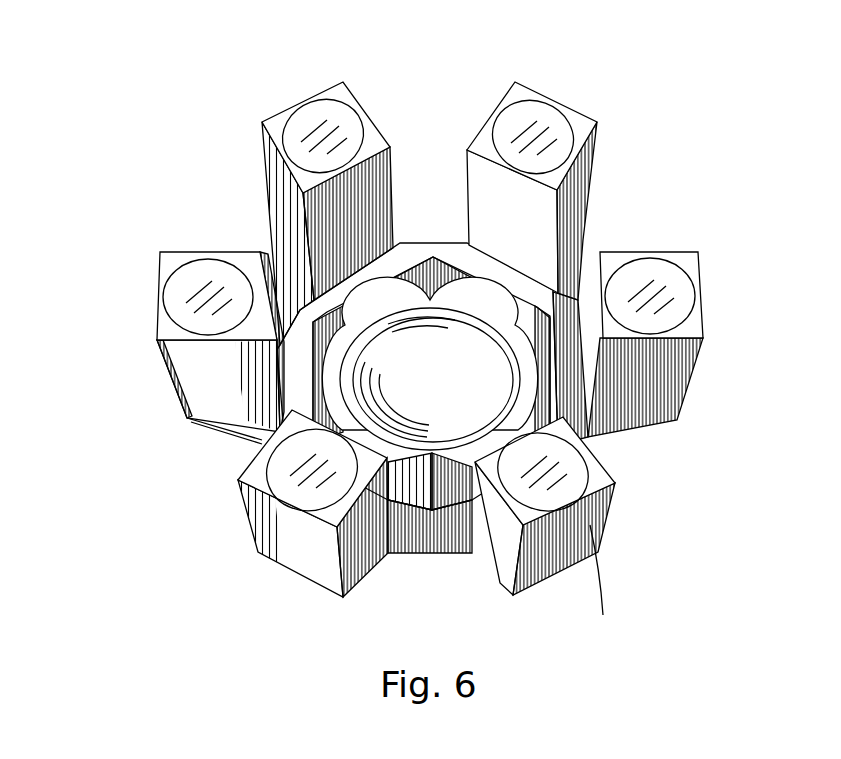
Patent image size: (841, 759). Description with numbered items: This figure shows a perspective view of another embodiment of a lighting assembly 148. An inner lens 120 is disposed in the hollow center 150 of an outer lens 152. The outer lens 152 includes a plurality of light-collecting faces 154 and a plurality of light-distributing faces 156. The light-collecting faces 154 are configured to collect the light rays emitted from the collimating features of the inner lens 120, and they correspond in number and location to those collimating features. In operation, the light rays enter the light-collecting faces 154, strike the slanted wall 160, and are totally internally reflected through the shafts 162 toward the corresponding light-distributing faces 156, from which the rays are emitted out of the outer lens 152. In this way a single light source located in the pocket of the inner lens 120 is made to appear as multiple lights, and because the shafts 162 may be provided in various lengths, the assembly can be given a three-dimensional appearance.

The lighting assembly 148 is at (413, 344).
The outer lens 152 is at (553, 305).
The light-collecting faces 154 is at (457, 283).
The inner lens 120 is at (493, 387).
The hollow center 150 is at (432, 510).
The slanted wall 160 is at (220, 437).
The shafts 162 is at (210, 382).
The light-distributing faces 156 is at (322, 135).